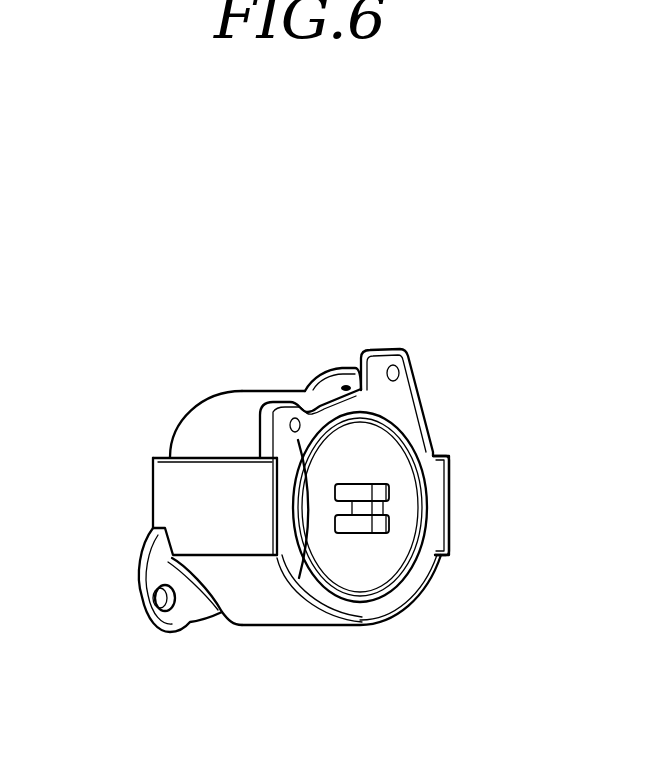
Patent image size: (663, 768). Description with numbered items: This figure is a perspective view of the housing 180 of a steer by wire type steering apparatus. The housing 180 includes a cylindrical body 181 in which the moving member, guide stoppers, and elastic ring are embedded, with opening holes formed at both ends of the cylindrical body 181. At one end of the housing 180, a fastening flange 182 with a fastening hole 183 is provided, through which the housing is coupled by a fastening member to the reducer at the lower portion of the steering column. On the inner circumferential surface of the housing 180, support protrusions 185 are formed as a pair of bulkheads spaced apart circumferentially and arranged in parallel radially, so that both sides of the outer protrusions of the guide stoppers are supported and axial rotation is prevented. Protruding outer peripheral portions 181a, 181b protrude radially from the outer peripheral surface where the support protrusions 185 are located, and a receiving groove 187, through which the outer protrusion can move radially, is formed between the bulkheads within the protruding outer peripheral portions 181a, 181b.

The housing 180 is at (172, 328).
The cylindrical body 181 is at (263, 605).
The protruding outer peripheral portion 181a is at (172, 492).
The protruding outer peripheral portion 181b is at (450, 502).
The fastening flange 182 is at (163, 572).
The fastening hole 183 is at (168, 602).
The support protrusions 185 is at (362, 490).
The receiving groove 187 is at (382, 507).